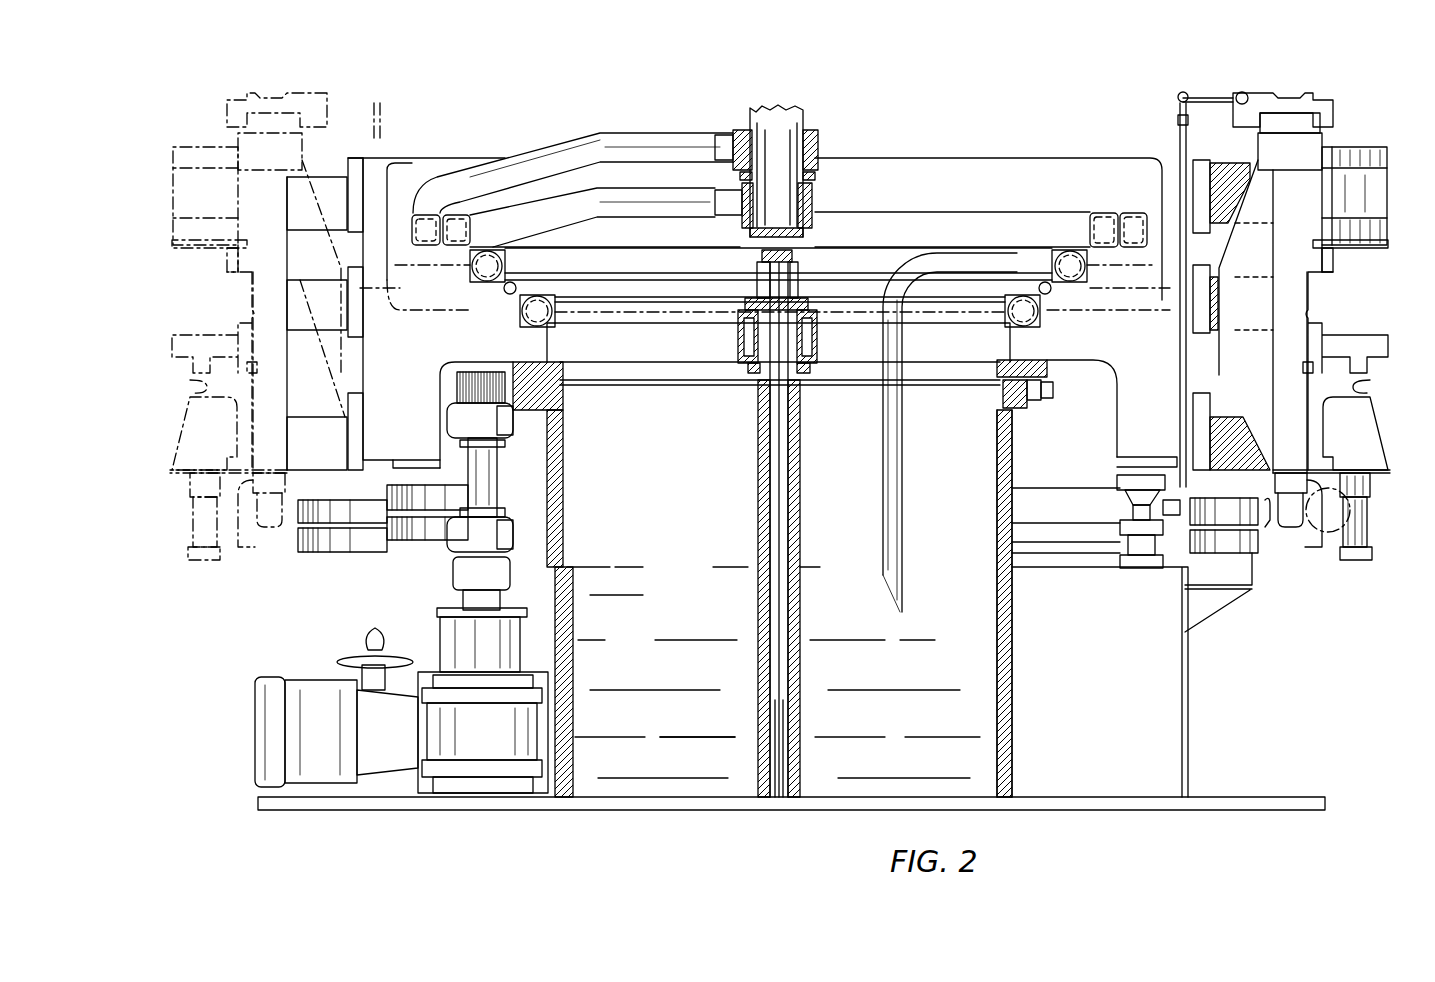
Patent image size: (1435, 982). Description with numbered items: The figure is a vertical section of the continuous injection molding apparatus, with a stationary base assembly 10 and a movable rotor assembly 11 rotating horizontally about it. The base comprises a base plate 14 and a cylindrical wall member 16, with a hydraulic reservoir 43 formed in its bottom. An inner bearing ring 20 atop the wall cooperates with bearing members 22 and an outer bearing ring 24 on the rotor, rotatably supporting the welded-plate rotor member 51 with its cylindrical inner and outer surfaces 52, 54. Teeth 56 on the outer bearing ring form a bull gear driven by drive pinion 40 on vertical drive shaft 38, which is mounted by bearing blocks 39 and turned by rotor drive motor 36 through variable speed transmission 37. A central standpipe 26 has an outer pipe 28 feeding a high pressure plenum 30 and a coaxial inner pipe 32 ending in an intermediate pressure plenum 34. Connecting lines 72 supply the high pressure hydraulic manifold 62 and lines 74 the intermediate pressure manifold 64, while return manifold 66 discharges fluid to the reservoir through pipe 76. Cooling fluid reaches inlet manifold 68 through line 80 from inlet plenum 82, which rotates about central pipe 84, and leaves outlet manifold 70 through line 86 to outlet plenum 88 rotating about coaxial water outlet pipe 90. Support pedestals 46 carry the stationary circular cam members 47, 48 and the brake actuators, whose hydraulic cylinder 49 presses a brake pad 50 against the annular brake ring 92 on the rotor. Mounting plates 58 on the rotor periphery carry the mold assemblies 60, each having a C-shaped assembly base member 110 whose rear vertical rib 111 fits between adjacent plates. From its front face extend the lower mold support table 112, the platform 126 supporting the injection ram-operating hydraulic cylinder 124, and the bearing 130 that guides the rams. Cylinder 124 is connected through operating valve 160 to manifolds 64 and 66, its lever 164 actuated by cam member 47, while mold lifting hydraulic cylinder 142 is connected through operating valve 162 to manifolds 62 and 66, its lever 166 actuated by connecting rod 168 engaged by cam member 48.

The stationary base assembly 10 is at (1192, 690).
The movable rotor assembly 11 is at (498, 146).
The base plate 14 is at (1228, 798).
The cylindrical wall member 16 is at (1013, 628).
The inner bearing ring 20 is at (1010, 392).
The bearing members 22 is at (1020, 393).
The outer bearing ring 24 is at (1040, 393).
The vertical standpipe 26 is at (750, 605).
The outer pipe 28 is at (800, 668).
The high pressure plenum chamber 30 is at (745, 345).
The inner pipe 32 is at (827, 447).
The intermediate pressure plenum 34 is at (786, 280).
The rotor drive motor 36 is at (262, 677).
The variable speed transmission 37 is at (476, 751).
The drive shaft 38 is at (495, 475).
The bearing blocks 39 is at (465, 422).
The drive pinion 40 is at (447, 388).
The reservoir 43 is at (886, 723).
The support pedestals 46 is at (1185, 650).
The cam member 47 is at (300, 540).
The cam member 48 is at (387, 525).
The hydraulic cylinder 49 is at (1137, 535).
The brake pad 50 is at (1117, 478).
The rotor member 51 is at (458, 346).
The inner surface 52 is at (550, 343).
The outer surface 54 is at (362, 357).
The teeth 56 is at (1053, 390).
The mounting plates 58 is at (331, 216).
The mold assembly 60 is at (173, 381).
The hydraulic manifold 62 is at (973, 310).
The hydraulic manifold 64 is at (1012, 290).
The hydraulic manifold 66 is at (1045, 263).
The cooling fluid inlet manifold 68 is at (1100, 227).
The cooling fluid outlet manifold 70 is at (1133, 227).
The connecting lines 72 is at (823, 340).
The tube 74 is at (822, 273).
The pipe 76 is at (903, 452).
The line 80 is at (656, 192).
The cooling fluid inlet plenum 82 is at (802, 195).
The pipe 84 is at (788, 210).
The line 86 is at (645, 135).
The outlet plenum 88 is at (807, 150).
The water outlet pipe 90 is at (798, 112).
The annular ring member 92 is at (418, 458).
The assembly base member 110 is at (1304, 206).
The vertical rib 111 is at (1258, 271).
The lower stationary mold support table 112 is at (1335, 343).
The injection ram-operating hydraulic cylinder 124 is at (1357, 540).
The platform 126 is at (1373, 448).
The bearing 130 is at (1365, 388).
The mold lifting hydraulic cylinder 142 is at (1347, 152).
The operating valve 160 is at (1300, 512).
The operating valve 162 is at (1313, 98).
The operating lever 164 is at (1263, 527).
The operating lever 166 is at (1210, 103).
The connecting rod 168 is at (1183, 392).